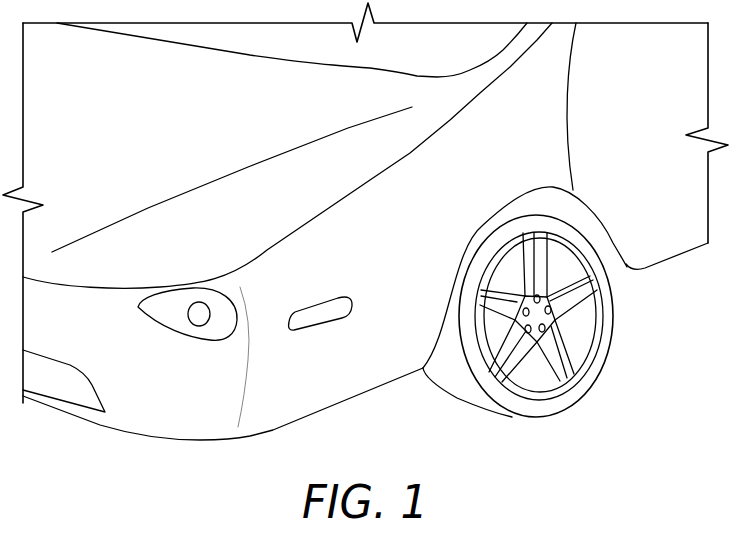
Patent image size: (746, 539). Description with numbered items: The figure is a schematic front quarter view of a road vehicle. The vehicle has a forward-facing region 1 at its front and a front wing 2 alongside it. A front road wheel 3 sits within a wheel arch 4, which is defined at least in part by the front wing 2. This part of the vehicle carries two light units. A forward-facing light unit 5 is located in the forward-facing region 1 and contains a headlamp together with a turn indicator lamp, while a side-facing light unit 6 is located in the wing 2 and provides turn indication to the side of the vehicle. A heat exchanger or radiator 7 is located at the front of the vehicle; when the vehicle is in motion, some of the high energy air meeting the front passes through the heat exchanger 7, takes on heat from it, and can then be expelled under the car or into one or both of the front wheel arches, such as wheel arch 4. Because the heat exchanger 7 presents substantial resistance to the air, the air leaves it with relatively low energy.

The forward-facing region 1 is at (100, 459).
The front wing 2 is at (370, 382).
The front road wheel 3 is at (613, 323).
The wheel arch 4 is at (590, 213).
The forward-facing light unit 5 is at (165, 321).
The side-facing light unit 6 is at (318, 317).
The heat exchanger 7 is at (52, 385).